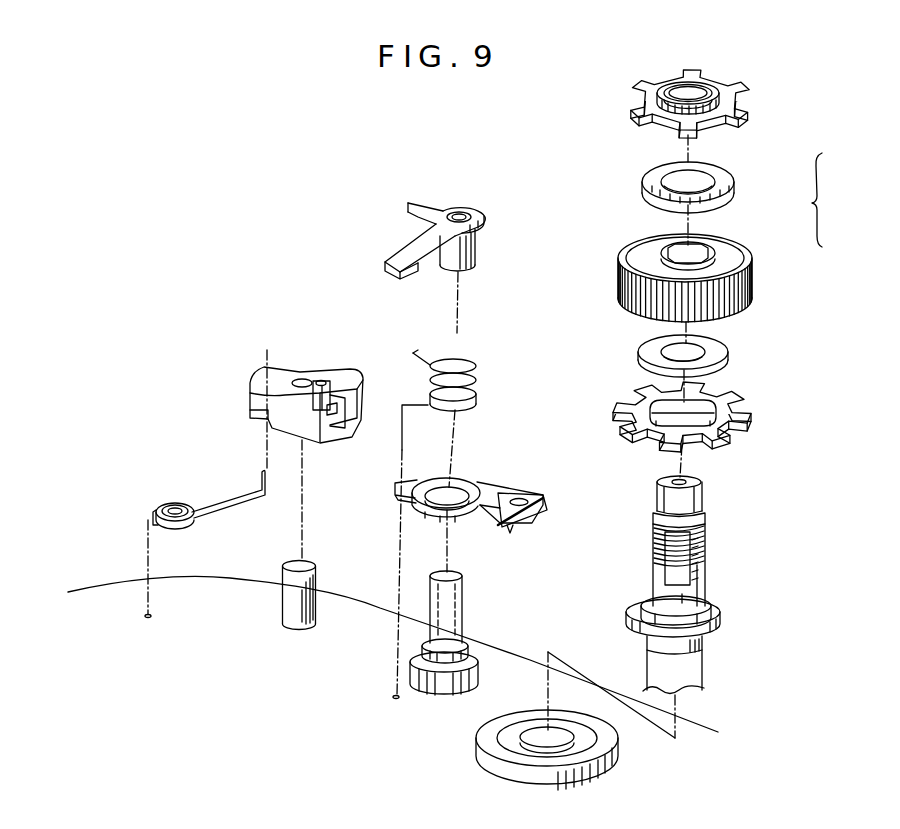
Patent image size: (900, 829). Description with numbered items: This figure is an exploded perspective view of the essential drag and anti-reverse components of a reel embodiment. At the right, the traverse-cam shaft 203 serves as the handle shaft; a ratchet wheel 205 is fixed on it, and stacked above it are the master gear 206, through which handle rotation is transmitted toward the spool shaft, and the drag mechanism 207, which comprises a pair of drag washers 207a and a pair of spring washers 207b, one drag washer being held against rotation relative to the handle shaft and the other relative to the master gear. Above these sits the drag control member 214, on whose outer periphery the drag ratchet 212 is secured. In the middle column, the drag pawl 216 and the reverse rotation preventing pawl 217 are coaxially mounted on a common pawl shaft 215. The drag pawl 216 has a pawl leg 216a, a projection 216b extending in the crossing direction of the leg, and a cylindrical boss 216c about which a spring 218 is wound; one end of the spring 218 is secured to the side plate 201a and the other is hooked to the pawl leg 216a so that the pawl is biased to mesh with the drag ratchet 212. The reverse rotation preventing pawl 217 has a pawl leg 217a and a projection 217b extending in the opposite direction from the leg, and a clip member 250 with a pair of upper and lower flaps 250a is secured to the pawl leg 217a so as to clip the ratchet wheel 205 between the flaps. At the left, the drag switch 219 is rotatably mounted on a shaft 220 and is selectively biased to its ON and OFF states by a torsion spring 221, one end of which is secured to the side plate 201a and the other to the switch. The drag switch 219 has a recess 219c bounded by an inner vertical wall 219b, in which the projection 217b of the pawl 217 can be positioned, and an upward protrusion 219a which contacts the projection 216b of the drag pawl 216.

The side plate 201a is at (122, 600).
The traverse-cam shaft 203 is at (687, 672).
The ratchet wheel 205 is at (735, 404).
The master gear 206 is at (745, 290).
The drag mechanism 207 is at (839, 200).
The drag washer 207a is at (710, 251).
The spring washer 207b is at (723, 183).
The drag ratchet 212 is at (733, 107).
The drag control member 214 is at (715, 90).
The pawl shaft 215 is at (450, 623).
The drag pawl 216 is at (438, 215).
The pawl leg 216a is at (410, 244).
The projection 216b is at (426, 203).
The cylindrical boss 216c is at (477, 252).
The reverse rotation preventing pawl 217 is at (464, 519).
The pawl leg 217a is at (532, 518).
The projection 217b is at (393, 500).
The spring 218 is at (460, 362).
The drag switch 219 is at (318, 402).
The upward protrusion 219a is at (324, 381).
The inner vertical wall 219b is at (345, 403).
The recess 219c is at (337, 418).
The shaft 220 is at (302, 592).
The torsion spring 221 is at (210, 502).
The clip member 250 is at (528, 490).
The flap 250a is at (513, 532).